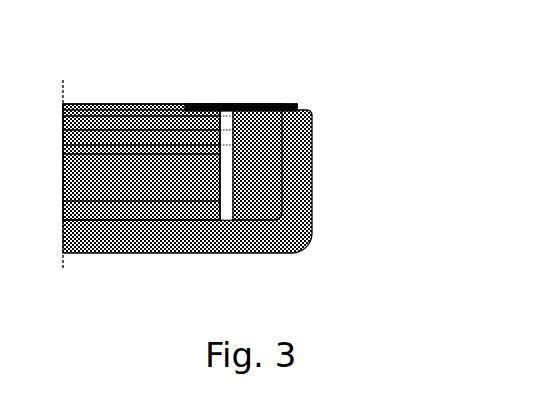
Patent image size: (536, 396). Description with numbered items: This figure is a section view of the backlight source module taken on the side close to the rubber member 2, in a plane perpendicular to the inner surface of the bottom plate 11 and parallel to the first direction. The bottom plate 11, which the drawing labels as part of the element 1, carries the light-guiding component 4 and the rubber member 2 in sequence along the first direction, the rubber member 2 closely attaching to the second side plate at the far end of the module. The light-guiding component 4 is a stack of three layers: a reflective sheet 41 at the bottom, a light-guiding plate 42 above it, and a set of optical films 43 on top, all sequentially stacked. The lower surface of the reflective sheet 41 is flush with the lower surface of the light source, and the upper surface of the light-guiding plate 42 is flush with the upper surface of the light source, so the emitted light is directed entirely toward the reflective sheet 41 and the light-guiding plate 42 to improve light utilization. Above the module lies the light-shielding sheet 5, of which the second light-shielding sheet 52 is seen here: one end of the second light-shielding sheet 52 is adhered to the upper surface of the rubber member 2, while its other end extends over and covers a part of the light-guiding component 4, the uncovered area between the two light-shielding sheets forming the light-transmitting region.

The case 1 is at (245, 179).
The bottom plate 11 is at (300, 242).
The rubber member 2 is at (262, 161).
The light-guiding component 4 is at (245, 145).
The reflective sheet 41 is at (222, 212).
The light-guiding plate 42 is at (222, 182).
The set of optical films 43 is at (313, 110).
The light-shielding sheet 5 is at (241, 74).
The second light-shielding sheet 52 is at (214, 104).